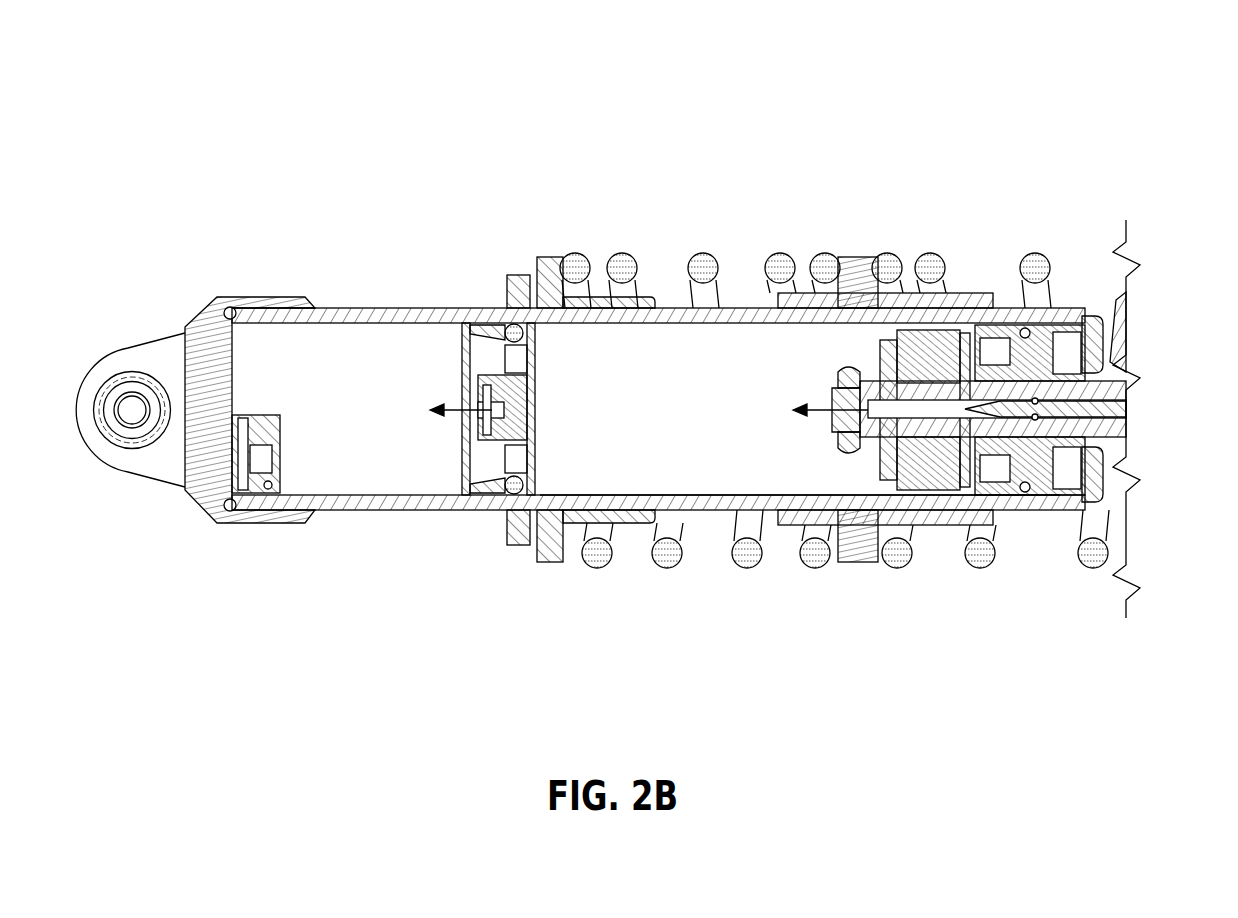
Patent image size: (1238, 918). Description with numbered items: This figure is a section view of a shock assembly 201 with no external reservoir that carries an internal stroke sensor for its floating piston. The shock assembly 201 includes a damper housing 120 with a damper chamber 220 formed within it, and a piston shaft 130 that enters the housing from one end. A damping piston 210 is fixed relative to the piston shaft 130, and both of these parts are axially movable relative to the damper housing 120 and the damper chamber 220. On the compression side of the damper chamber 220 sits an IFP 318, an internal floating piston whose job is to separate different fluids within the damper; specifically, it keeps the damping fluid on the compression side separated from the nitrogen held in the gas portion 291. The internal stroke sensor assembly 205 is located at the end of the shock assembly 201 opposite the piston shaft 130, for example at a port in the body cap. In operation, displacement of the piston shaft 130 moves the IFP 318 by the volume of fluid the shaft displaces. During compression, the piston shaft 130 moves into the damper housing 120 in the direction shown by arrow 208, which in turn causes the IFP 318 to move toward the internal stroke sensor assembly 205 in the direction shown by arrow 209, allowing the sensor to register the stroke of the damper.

The shock assembly 201 is at (348, 131).
The damper housing 120 is at (380, 310).
The IFP 318 is at (490, 350).
The damper chamber 220 is at (753, 340).
The damping piston 210 is at (918, 365).
The piston shaft 130 is at (1133, 410).
The internal stroke sensor assembly 205 is at (256, 498).
The gas portion 291 is at (385, 470).
The arrow 209 is at (457, 413).
The arrow 208 is at (762, 510).